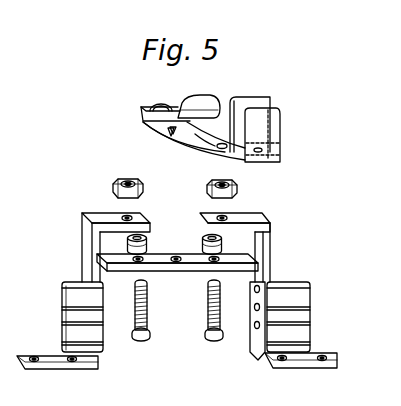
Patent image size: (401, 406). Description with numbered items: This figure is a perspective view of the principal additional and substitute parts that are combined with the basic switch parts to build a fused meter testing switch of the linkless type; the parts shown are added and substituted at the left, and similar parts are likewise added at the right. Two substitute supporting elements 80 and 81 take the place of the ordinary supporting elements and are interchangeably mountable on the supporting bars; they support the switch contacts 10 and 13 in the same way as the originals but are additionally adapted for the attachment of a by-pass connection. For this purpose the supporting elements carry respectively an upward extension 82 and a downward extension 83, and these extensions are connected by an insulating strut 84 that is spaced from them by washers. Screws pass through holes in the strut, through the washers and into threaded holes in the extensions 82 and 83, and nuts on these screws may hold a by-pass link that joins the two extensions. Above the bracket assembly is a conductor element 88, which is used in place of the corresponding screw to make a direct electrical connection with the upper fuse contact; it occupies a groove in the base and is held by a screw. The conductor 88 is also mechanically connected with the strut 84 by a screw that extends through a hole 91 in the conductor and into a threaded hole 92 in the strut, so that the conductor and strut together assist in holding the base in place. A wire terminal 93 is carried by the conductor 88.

The switch contact 10 is at (72, 298).
The switch contact 13 is at (303, 296).
The substitute supporting element 80 is at (96, 237).
The substitute supporting element 81 is at (249, 238).
The upward extension 82 is at (102, 215).
The downward extension 83 is at (245, 216).
The insulating strut 84 is at (177, 267).
The conductor element 88 is at (196, 143).
The hole 91 is at (171, 137).
The threaded hole 92 is at (178, 256).
The wire terminal 93 is at (210, 100).